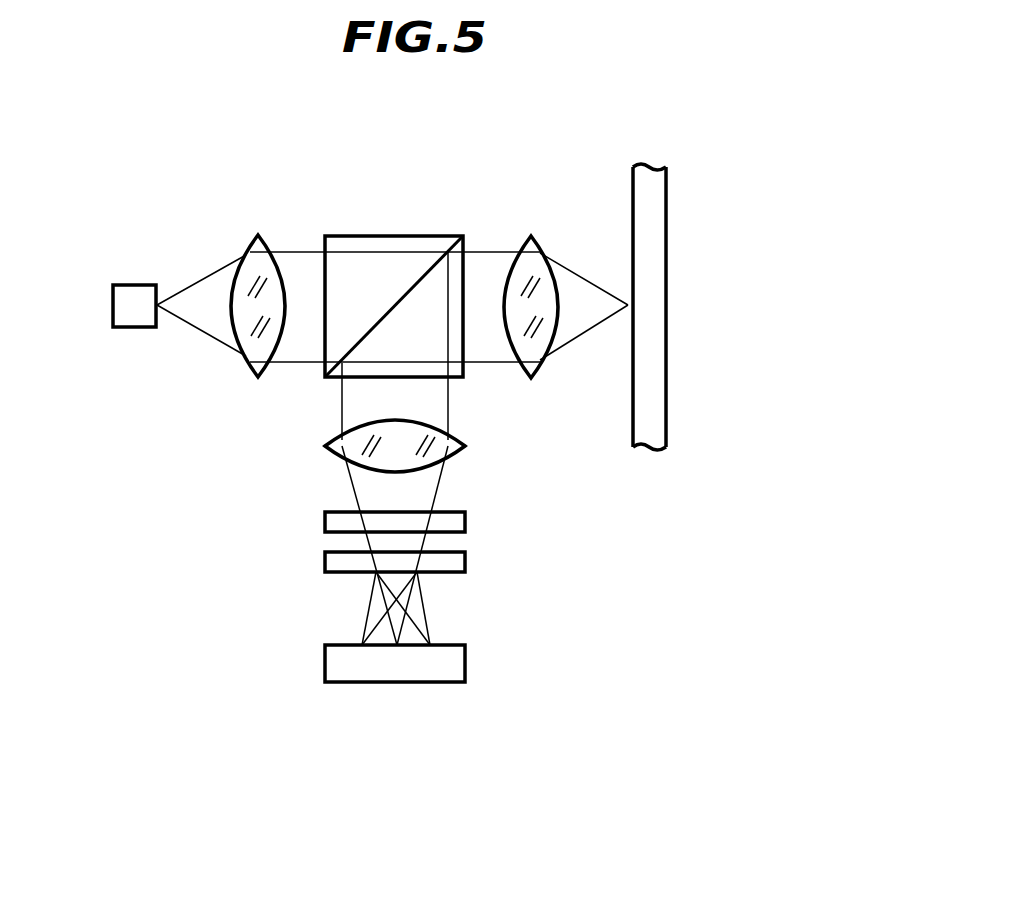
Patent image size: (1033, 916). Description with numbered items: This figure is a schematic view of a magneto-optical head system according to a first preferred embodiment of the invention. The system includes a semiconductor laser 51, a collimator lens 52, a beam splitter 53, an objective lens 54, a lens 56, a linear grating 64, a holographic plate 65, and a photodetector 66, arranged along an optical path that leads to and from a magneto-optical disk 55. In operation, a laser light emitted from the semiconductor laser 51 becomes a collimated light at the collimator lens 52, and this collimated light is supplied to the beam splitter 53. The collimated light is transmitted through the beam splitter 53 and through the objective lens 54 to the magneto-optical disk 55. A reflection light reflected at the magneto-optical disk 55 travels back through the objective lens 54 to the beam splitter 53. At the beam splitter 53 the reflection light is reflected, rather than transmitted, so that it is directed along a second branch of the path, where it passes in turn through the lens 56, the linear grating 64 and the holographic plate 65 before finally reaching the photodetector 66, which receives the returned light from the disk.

The semiconductor laser 51 is at (122, 322).
The collimator lens 52 is at (258, 236).
The beam splitter 53 is at (375, 236).
The objective lens 54 is at (531, 236).
The magneto-optical disk 55 is at (655, 212).
The lens 56 is at (465, 445).
The linear grating 64 is at (465, 520).
The holographic plate 65 is at (325, 562).
The photodetector 66 is at (465, 660).